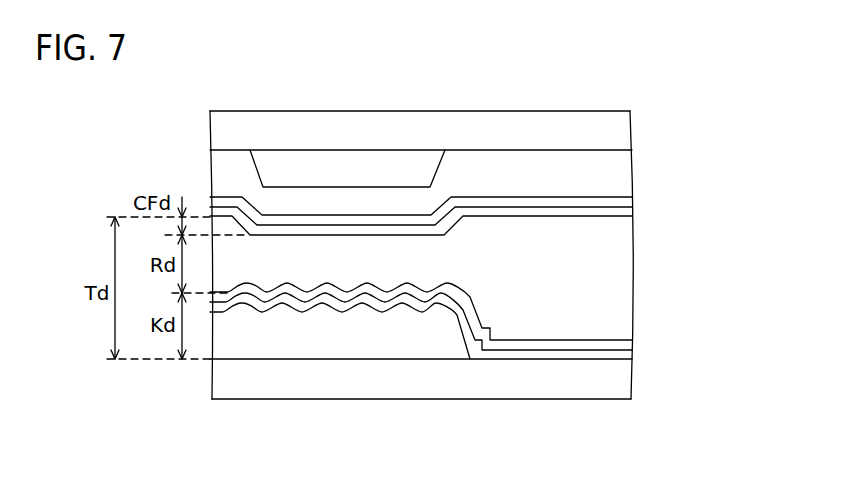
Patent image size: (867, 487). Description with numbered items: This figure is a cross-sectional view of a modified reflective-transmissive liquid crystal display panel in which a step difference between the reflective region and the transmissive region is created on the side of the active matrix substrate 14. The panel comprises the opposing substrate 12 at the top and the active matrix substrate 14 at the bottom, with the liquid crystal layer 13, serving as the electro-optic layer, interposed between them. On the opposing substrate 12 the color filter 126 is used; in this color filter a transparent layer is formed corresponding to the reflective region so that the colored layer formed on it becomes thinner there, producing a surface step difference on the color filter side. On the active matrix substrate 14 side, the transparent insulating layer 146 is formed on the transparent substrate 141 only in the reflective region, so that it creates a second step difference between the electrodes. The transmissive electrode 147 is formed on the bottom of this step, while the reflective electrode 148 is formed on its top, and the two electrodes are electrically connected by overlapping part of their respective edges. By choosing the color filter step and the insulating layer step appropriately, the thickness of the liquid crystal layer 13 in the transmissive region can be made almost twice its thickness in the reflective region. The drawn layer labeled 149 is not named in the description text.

The opposing substrate 12 is at (452, 110).
The color filter 126 is at (634, 178).
The liquid crystal layer 13 is at (618, 272).
The active matrix substrate 14 is at (472, 400).
The transparent substrate 141 is at (618, 390).
The transparent insulating layer 146 is at (384, 347).
The transmissive electrode 147 is at (618, 356).
The reflective electrode 148 is at (307, 305).
The intermediate layer 149 is at (618, 345).